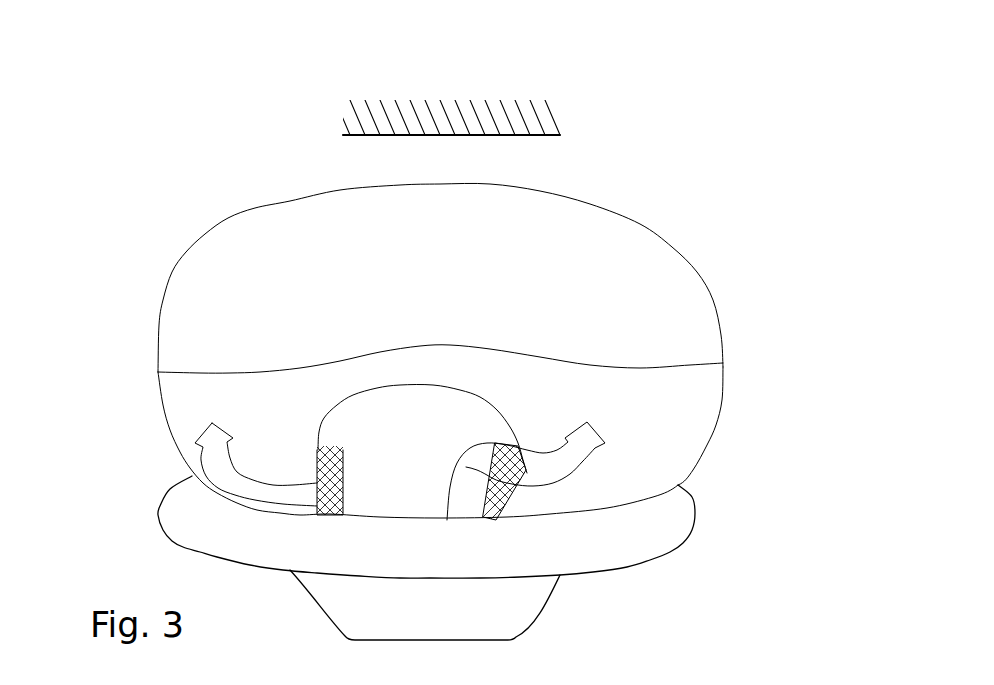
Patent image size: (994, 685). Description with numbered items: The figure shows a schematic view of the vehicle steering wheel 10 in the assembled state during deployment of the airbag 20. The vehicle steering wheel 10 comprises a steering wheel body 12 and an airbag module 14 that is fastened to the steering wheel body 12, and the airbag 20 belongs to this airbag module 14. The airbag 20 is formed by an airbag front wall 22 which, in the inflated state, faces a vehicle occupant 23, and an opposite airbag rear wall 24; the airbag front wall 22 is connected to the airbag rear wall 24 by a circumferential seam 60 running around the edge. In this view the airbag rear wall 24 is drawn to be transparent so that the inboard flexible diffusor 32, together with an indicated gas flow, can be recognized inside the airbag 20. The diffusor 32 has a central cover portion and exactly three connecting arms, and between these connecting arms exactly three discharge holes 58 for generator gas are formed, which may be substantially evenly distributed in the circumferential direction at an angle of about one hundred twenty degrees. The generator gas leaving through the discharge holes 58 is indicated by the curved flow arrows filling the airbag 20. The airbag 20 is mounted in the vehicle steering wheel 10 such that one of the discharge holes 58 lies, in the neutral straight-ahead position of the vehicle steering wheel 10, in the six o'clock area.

The vehicle steering wheel 10 is at (155, 220).
The steering wheel body 12 is at (618, 555).
The airbag module 14 is at (140, 442).
The airbag 20 is at (623, 183).
The airbag front wall 22 is at (637, 250).
The vehicle occupant 23 is at (445, 122).
The airbag rear wall 24 is at (682, 419).
The flexible diffusor 32 is at (388, 390).
The discharge holes 58 is at (322, 485).
The circumferential seam 60 is at (648, 368).